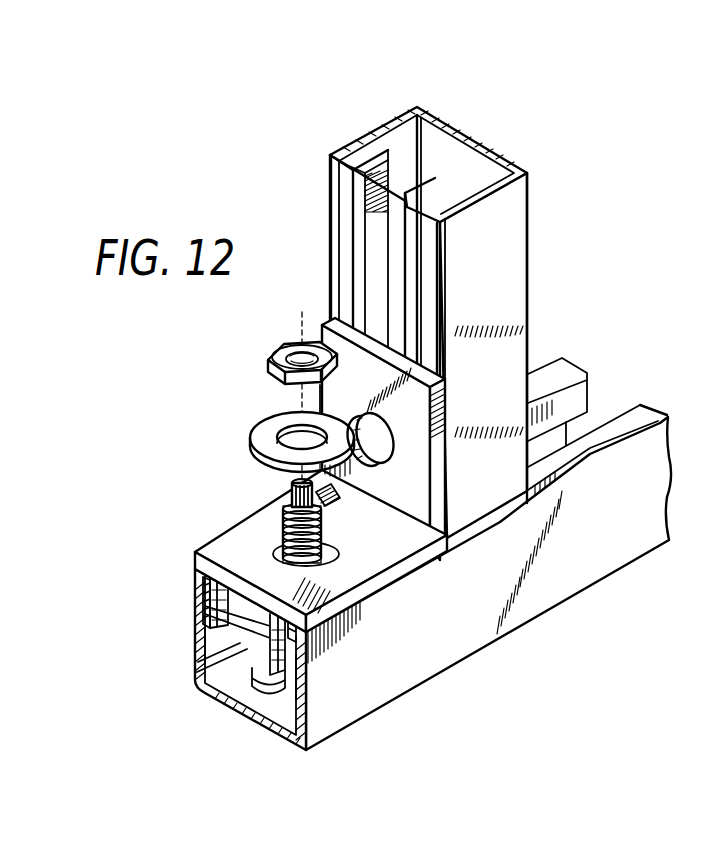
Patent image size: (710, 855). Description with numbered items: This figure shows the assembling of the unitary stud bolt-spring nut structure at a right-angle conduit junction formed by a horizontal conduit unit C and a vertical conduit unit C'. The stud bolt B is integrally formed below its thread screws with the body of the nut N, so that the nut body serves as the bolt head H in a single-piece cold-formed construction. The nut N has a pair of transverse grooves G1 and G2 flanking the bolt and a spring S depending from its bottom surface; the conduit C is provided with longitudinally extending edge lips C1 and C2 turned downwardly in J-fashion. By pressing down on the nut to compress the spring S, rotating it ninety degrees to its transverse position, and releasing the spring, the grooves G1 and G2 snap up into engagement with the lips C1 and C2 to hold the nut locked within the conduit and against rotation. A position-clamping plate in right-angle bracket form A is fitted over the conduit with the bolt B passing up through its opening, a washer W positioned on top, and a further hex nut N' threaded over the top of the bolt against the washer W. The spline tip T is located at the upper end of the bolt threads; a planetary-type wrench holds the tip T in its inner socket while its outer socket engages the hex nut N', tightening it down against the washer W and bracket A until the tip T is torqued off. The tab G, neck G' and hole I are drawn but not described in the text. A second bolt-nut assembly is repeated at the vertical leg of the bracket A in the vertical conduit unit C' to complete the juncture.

The conduit section C is at (433, 554).
The vertical conduit unit C' is at (454, 333).
The angle bracket plate A is at (243, 534).
The stud bolt B is at (325, 540).
The washer W is at (267, 444).
The hex nut N' is at (266, 358).
The bolt neck G' is at (278, 482).
The tab G is at (332, 507).
The spline tip T is at (357, 458).
The hole I is at (275, 547).
The conduit lip C1 is at (290, 638).
The conduit lip C2 is at (193, 628).
The transverse groove G1 is at (296, 668).
The transverse groove G2 is at (197, 654).
The nut N is at (192, 653).
The bolt head H is at (192, 653).
The spring S is at (226, 703).